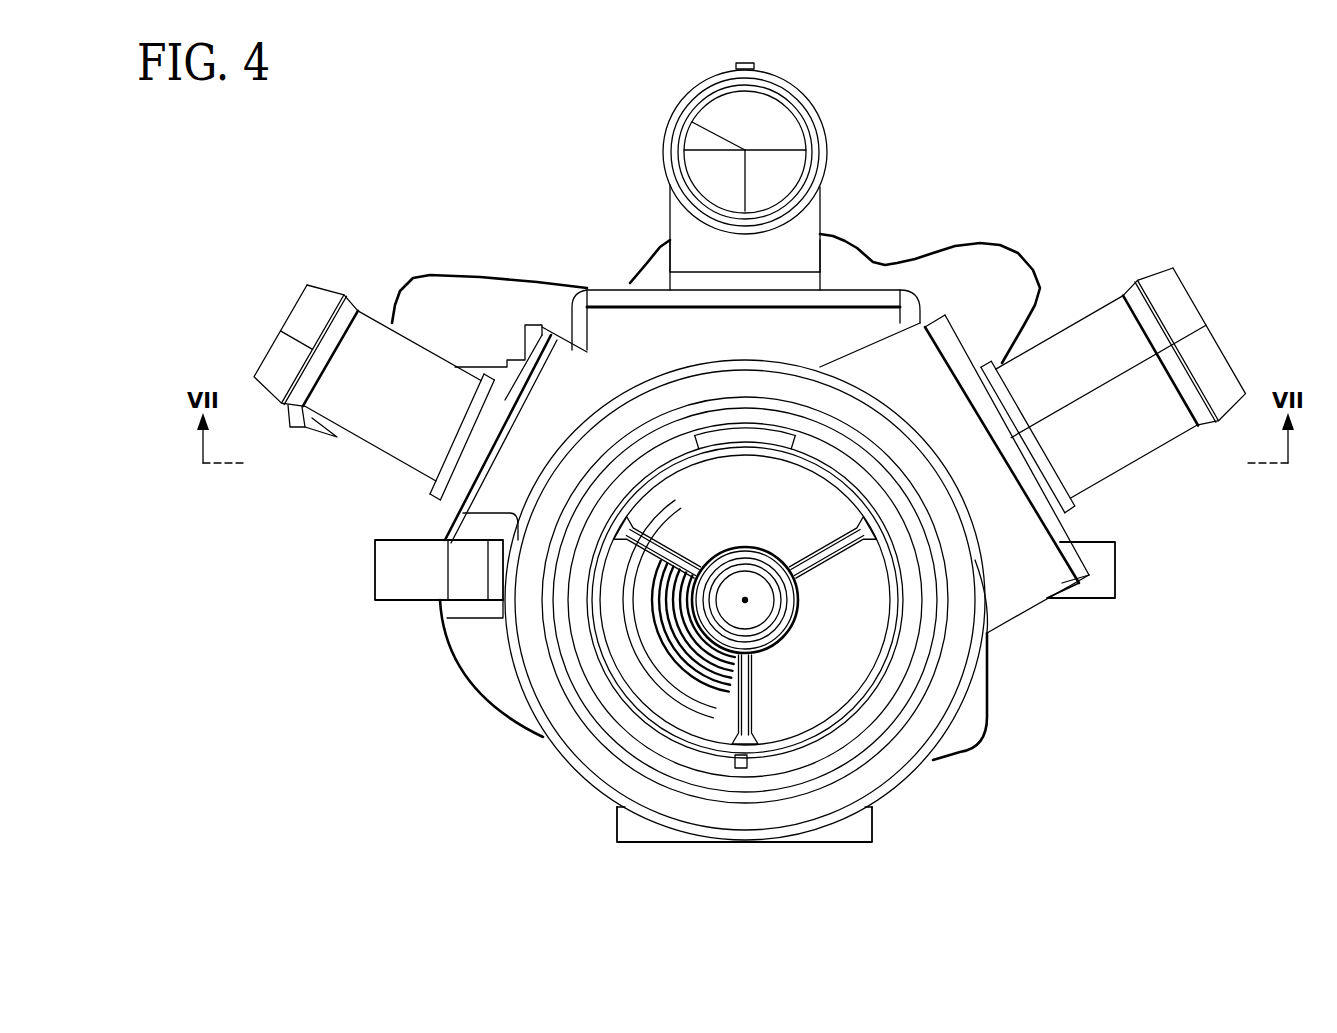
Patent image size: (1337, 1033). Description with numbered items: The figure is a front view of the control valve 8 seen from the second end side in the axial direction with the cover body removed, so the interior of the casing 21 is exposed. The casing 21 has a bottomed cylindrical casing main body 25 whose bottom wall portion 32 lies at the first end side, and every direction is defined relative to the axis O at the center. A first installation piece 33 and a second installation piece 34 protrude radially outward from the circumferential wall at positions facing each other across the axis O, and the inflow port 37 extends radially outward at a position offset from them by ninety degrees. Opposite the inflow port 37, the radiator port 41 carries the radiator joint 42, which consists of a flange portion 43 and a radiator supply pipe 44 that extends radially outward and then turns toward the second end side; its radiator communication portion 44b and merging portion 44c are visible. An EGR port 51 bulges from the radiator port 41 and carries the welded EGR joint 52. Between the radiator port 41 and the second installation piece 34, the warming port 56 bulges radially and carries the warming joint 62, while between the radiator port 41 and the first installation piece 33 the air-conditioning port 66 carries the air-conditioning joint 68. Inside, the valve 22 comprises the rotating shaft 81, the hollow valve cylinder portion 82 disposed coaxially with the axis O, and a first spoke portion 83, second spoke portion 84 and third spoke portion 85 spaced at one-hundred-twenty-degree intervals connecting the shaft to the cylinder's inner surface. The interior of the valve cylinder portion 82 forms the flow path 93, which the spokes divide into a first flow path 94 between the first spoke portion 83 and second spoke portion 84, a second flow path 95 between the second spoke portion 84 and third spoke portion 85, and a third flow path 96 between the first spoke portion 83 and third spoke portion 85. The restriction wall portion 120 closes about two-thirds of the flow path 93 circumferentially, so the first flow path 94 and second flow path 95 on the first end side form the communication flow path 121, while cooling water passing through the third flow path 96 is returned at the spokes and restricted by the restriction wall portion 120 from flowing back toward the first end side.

The control valve 8 is at (1020, 95).
The casing 21 is at (1030, 208).
The casing main body 25 is at (983, 672).
The valve 22 is at (862, 647).
The bottom wall portion 32 is at (455, 295).
The first installation piece 33 is at (385, 570).
The second installation piece 34 is at (1105, 573).
The inflow port 37 is at (858, 835).
The radiator port 41 is at (880, 320).
The radiator joint 42 is at (818, 99).
The flange portion 43 is at (853, 290).
The radiator supply pipe 44 is at (745, 152).
The radiator communication portion 44b is at (680, 228).
The merging portion 44c is at (685, 132).
The EGR port 51 is at (557, 330).
The EGR joint 52 is at (487, 375).
The warming port 56 is at (1015, 600).
The warming joint 62 is at (1128, 455).
The air-conditioning port 66 is at (605, 390).
The air-conditioning joint 68 is at (372, 325).
The rotating shaft 81 is at (728, 640).
The valve cylinder portion 82 is at (738, 768).
The first spoke portion 83 is at (745, 703).
The second spoke portion 84 is at (818, 560).
The third spoke portion 85 is at (655, 557).
The flow path 93 is at (660, 683).
The first flow path 94 is at (806, 686).
The second flow path 95 is at (694, 494).
The third flow path 96 is at (655, 650).
The restriction wall portion 120 is at (868, 717).
The communication flow path 121 is at (745, 600).
The axis O is at (745, 600).